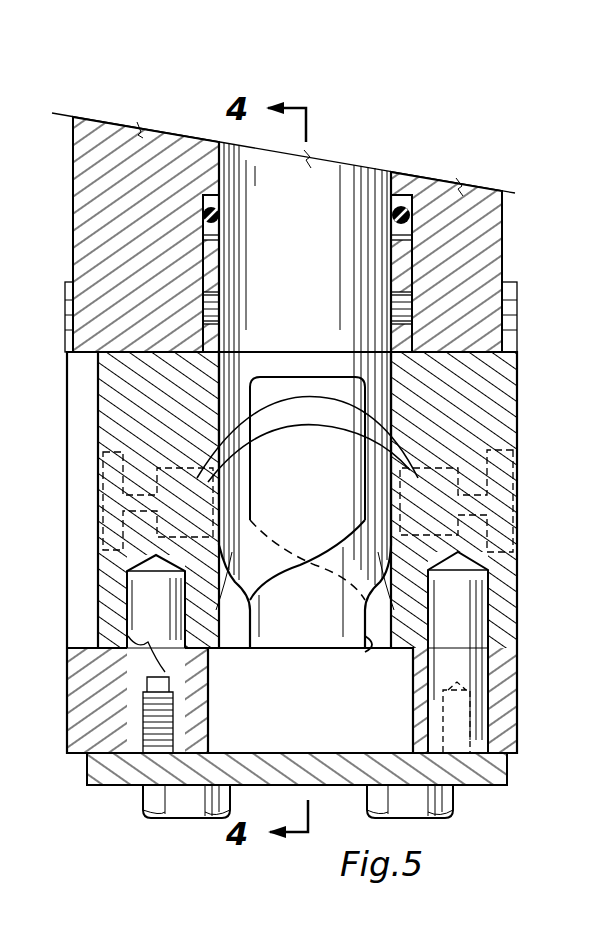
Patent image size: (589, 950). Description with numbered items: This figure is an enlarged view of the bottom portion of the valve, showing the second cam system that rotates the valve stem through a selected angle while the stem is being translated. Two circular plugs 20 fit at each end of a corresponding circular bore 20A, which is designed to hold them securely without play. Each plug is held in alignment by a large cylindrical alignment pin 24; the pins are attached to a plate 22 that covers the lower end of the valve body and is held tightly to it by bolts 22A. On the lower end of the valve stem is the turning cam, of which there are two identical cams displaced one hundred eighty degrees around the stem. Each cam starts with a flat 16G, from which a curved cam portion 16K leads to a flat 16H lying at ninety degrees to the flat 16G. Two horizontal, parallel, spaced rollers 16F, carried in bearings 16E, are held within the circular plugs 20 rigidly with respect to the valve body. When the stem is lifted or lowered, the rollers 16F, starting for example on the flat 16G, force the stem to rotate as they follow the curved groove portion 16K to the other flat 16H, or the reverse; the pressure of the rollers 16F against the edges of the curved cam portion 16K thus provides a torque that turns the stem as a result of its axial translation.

The bearings 16E is at (307, 435).
The rollers 16F is at (309, 451).
The flats 16G is at (330, 490).
The flats 16H is at (372, 650).
The curved cam portion 16K is at (277, 567).
The circular plugs 20 is at (97, 468).
The circular bore 20A is at (137, 512).
The plate 22 is at (492, 786).
The bolts 22A is at (145, 808).
The cylindrical alignment pin 24 is at (160, 640).